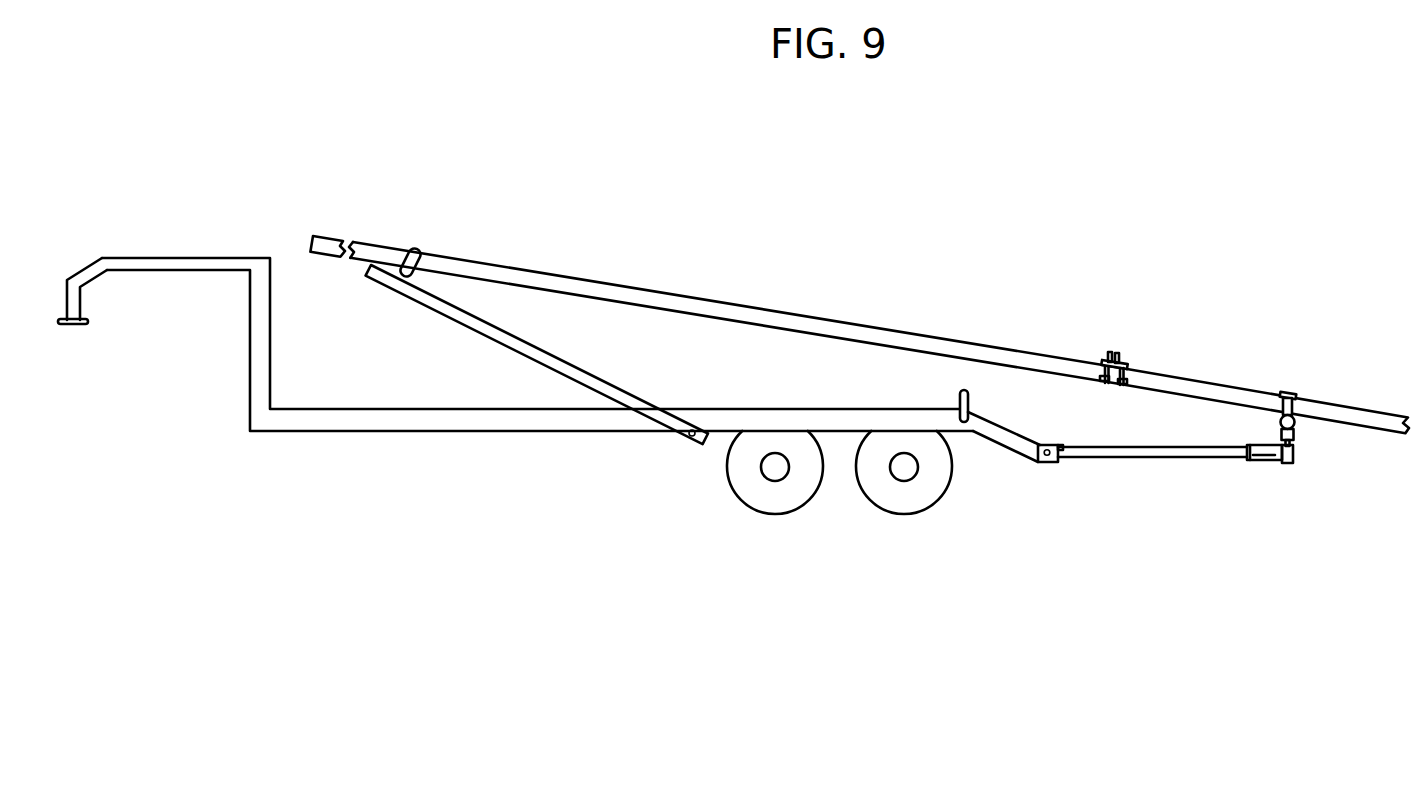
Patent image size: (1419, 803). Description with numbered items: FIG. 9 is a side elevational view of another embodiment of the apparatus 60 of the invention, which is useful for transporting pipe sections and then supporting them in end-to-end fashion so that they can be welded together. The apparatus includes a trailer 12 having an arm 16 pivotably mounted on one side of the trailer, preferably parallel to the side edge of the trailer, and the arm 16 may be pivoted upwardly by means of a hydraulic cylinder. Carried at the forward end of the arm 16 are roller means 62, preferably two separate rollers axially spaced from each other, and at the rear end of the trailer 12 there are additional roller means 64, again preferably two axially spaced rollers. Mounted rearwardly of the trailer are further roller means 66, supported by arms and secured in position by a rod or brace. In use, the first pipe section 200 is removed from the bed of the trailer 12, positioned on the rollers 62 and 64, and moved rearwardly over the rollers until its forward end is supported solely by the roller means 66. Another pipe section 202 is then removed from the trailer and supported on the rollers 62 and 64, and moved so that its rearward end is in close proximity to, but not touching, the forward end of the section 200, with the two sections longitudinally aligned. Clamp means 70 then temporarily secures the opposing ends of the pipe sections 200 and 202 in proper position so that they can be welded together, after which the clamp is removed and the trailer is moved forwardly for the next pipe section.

The trailer 12 is at (373, 432).
The arm 16 is at (498, 340).
The apparatus 60 is at (592, 168).
The roller means 62 is at (400, 256).
The roller means 64 is at (958, 396).
The roller means 66 is at (1296, 380).
The clamp means 70 is at (1129, 346).
The first pipe section 200 is at (1208, 385).
The pipe section 202 is at (892, 332).